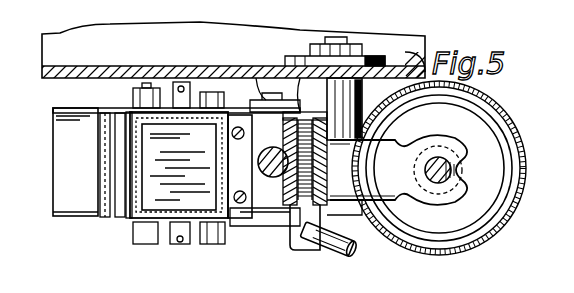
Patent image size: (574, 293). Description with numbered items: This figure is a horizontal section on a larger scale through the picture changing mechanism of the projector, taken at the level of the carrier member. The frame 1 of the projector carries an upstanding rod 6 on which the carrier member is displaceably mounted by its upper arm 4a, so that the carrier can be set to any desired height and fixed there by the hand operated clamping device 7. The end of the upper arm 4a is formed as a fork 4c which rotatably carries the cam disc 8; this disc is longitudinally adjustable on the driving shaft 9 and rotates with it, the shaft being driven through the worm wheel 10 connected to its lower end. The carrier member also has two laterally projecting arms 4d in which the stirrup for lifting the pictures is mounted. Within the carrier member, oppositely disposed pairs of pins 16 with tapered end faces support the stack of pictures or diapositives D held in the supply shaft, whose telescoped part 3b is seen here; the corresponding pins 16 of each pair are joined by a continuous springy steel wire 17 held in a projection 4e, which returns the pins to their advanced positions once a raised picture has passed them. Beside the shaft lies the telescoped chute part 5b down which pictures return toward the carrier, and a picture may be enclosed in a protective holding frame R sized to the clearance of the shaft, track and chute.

The frame 1 is at (107, 68).
The pins 16 is at (146, 86).
The projection 4e is at (181, 86).
The springy steel wire 17 is at (205, 92).
The laterally projecting arms 4d is at (255, 112).
The worm wheel 10 is at (508, 120).
The fork 4c is at (448, 140).
The driving shaft 9 is at (455, 170).
The cam disc 8 is at (498, 170).
The lower telescoped chute part 5b is at (55, 176).
The telescoped supply shaft part 3b is at (130, 172).
The holding frame R is at (140, 198).
The pictures or diapositives D is at (179, 165).
The upstanding rod 6 is at (268, 176).
The upper arm 4a is at (276, 200).
The hand operated clamping device 7 is at (335, 250).